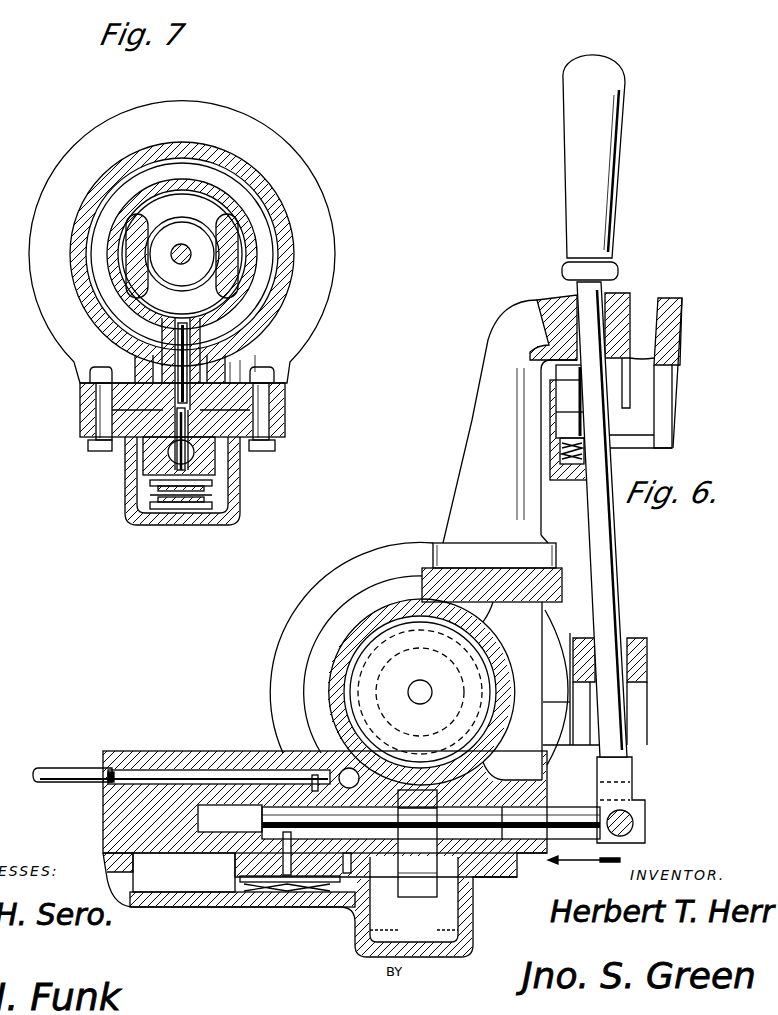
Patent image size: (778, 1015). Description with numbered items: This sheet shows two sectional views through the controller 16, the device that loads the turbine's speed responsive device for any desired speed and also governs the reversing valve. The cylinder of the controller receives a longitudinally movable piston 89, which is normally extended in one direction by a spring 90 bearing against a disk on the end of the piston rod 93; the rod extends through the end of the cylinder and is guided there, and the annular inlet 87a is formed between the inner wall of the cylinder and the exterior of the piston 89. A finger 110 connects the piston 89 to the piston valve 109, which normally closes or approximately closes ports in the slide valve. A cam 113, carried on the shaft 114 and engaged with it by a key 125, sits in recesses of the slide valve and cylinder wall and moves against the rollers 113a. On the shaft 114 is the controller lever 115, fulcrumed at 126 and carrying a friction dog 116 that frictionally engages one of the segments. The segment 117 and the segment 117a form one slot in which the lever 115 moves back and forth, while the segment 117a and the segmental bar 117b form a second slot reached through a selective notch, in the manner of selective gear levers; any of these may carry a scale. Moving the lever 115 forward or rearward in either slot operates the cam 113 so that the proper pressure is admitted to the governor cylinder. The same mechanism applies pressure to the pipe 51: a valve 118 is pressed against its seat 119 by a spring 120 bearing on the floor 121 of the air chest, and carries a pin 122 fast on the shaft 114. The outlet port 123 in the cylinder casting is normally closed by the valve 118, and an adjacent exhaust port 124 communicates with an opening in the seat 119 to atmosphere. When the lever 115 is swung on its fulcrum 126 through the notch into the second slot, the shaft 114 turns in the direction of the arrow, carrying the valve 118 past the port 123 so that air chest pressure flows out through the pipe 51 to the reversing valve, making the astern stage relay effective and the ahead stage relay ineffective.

In FIG. 7, the controller 16 is at (296, 372).
In FIG. 6, the controller 16 is at (450, 462).
In FIG. 6, the pipe 51 is at (46, 766).
In FIG. 6, the inlet 87a is at (480, 645).
In FIG. 6, the piston 89 is at (412, 692).
In FIG. 7, the spring 90 is at (232, 266).
In FIG. 7, the piston rod 93 is at (184, 250).
In FIG. 6, the piston rod 93 is at (425, 684).
In FIG. 7, the piston valve 109 is at (190, 452).
In FIG. 7, the finger 110 is at (181, 347).
In FIG. 6, the cam 113 is at (442, 908).
In FIG. 6, the rollers 113a is at (440, 882).
In FIG. 6, the shaft 114 is at (559, 816).
In FIG. 6, the controller lever 115 is at (597, 212).
In FIG. 6, the friction dog 116 is at (549, 398).
In FIG. 6, the segment 117 is at (570, 358).
In FIG. 6, the segment 117a is at (639, 403).
In FIG. 6, the segmental bar 117b is at (677, 313).
In FIG. 6, the valve 118 is at (262, 884).
In FIG. 6, the valve seat 119 is at (184, 872).
In FIG. 6, the spring 120 is at (312, 894).
In FIG. 6, the floor 121 is at (162, 887).
In FIG. 6, the pin 122 is at (286, 878).
In FIG. 6, the outlet port 123 is at (312, 790).
In FIG. 6, the exhaust port 124 is at (345, 772).
In FIG. 6, the key 125 is at (480, 842).
In FIG. 6, the fulcrum 126 is at (632, 662).